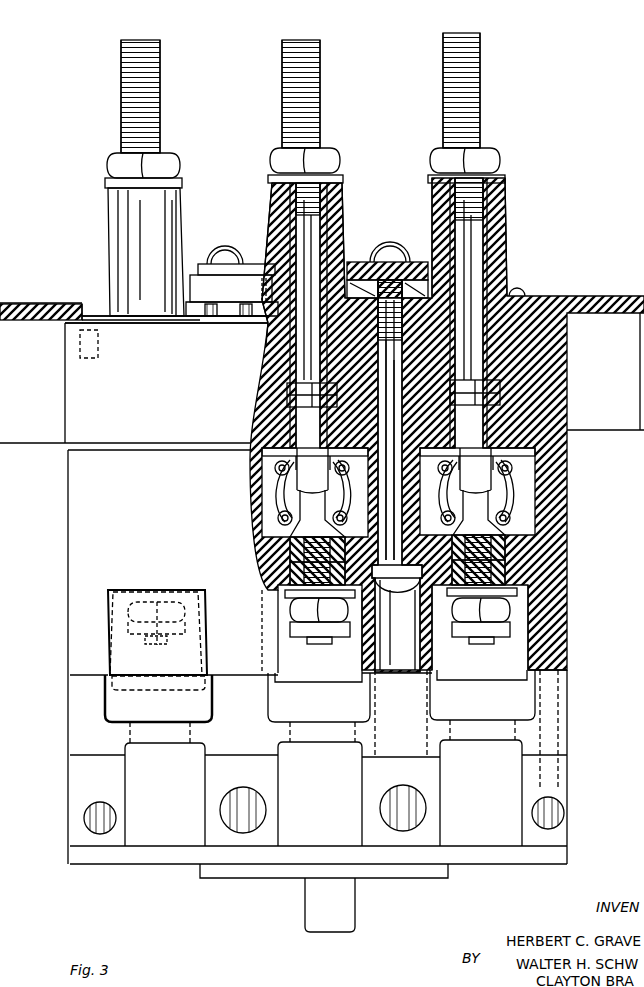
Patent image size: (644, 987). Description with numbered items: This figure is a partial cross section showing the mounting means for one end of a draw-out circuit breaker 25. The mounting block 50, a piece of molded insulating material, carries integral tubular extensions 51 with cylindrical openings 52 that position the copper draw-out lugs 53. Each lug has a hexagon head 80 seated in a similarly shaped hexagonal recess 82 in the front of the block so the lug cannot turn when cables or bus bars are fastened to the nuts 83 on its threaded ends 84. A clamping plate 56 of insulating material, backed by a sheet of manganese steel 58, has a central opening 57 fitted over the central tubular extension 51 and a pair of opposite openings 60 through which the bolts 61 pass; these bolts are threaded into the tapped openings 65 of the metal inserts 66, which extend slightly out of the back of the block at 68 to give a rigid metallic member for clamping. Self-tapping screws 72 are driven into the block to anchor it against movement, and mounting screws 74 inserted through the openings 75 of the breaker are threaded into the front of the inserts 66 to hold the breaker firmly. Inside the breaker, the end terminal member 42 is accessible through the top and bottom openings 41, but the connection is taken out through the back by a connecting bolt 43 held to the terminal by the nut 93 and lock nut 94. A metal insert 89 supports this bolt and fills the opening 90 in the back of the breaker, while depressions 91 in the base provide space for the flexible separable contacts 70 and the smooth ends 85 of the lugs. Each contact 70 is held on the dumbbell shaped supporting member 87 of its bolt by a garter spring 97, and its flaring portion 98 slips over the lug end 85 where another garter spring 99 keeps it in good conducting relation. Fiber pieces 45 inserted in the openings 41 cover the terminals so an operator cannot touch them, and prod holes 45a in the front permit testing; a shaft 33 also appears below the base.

The circuit breaker 25 is at (610, 710).
The shaft 33 is at (352, 918).
The top and bottom openings 41 is at (118, 663).
The end terminal member 42 is at (130, 598).
The connecting bolt 43 is at (148, 640).
The fiber pieces 45 is at (118, 691).
The prod holes 45a is at (140, 732).
The mounting block 50 is at (566, 331).
The tubular extensions 51 is at (180, 226).
The cylindrical openings 52 is at (344, 233).
The draw-out lugs 53 is at (165, 95).
The clamping plate 56 is at (196, 298).
The central opening 57 is at (264, 266).
The sheet of manganese steel 58 is at (229, 267).
The opposite openings 60 is at (410, 262).
The bolts 61 is at (232, 256).
The tapped openings 65 is at (270, 337).
The metal inserts 66 is at (270, 353).
The back end of insert 68 is at (167, 326).
The separable contacts 70 is at (292, 492).
The self-tapping screws 72 is at (519, 290).
The mounting screws 74 is at (392, 489).
The openings 75 is at (378, 660).
The hexagon head 80 is at (288, 386).
The hexagonal recesses 82 is at (288, 397).
The nuts 83 is at (172, 166).
The threaded ends 84 is at (158, 120).
The ends of draw-out lugs 85 is at (292, 478).
The separable contact supporting member 87 is at (282, 505).
The metal insert 89 is at (262, 540).
The opening 90 is at (282, 563).
The depressions 91 is at (262, 455).
The nut 93 is at (298, 617).
The lock nut 94 is at (298, 633).
The garter spring 97 is at (345, 516).
The flaring portion 98 is at (337, 462).
The garter springs 99 is at (347, 468).